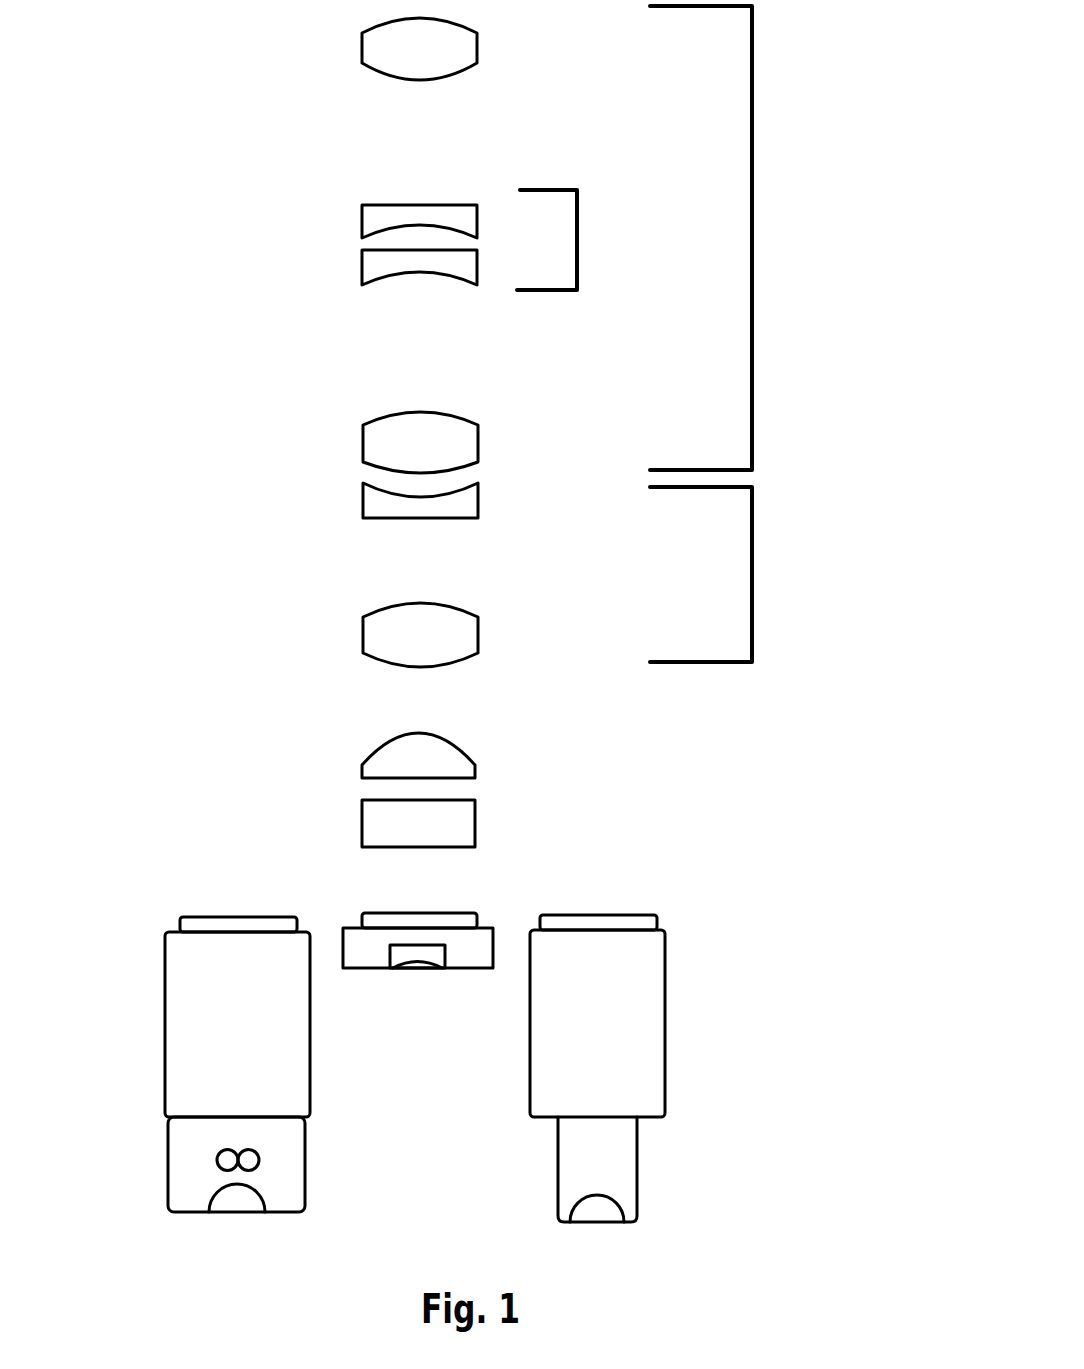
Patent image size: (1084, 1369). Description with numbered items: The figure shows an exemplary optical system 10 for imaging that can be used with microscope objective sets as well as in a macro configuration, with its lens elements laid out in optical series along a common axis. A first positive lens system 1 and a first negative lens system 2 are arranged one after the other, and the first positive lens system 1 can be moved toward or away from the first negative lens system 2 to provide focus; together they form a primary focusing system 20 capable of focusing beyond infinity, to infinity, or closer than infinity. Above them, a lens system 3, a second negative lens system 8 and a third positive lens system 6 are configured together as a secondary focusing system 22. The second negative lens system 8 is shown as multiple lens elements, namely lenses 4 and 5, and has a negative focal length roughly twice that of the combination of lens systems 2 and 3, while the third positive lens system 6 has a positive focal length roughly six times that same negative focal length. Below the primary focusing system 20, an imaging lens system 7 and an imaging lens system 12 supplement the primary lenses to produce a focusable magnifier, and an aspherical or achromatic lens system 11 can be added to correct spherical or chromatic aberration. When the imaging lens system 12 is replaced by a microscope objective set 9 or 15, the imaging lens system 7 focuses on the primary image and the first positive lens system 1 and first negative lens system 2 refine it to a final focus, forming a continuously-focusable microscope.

The first positive lens system 1 is at (363, 630).
The first negative lens system 2 is at (363, 507).
The lens system 3 is at (363, 442).
The lens 4 is at (363, 218).
The lens 5 is at (363, 253).
The third positive lens system 6 is at (363, 53).
The imaging lens system 7 is at (475, 762).
The second negative lens system 8 is at (577, 240).
The microscope objective set 9 is at (237, 1064).
The optical system 10 is at (112, 373).
The aspherical or achromatic lens system 11 is at (475, 813).
The imaging lens system 12 is at (403, 960).
The microscope objective set 15 is at (597, 1068).
The primary focusing system 20 is at (752, 576).
The secondary focusing system 22 is at (752, 240).